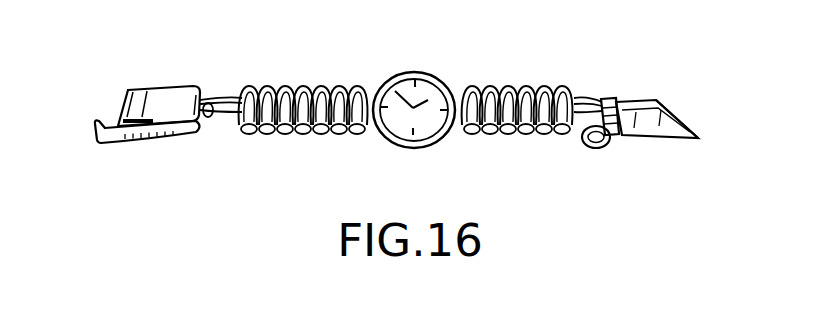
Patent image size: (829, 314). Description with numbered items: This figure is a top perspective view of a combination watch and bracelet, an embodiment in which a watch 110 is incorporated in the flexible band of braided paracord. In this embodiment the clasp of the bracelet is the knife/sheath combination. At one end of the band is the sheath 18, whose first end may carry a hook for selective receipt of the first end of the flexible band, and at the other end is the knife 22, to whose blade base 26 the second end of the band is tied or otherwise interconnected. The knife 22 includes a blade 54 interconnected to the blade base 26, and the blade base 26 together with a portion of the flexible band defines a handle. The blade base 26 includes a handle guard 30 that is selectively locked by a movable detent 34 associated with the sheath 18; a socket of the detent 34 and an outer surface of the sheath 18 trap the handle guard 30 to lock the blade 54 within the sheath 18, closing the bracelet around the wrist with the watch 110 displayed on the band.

The sheath 18 is at (162, 104).
The knife 22 is at (699, 150).
The blade base 26 is at (600, 100).
The handle guard 30 is at (607, 146).
The movable detent 34 is at (98, 142).
The blade 54 is at (672, 118).
The watch 110 is at (437, 102).